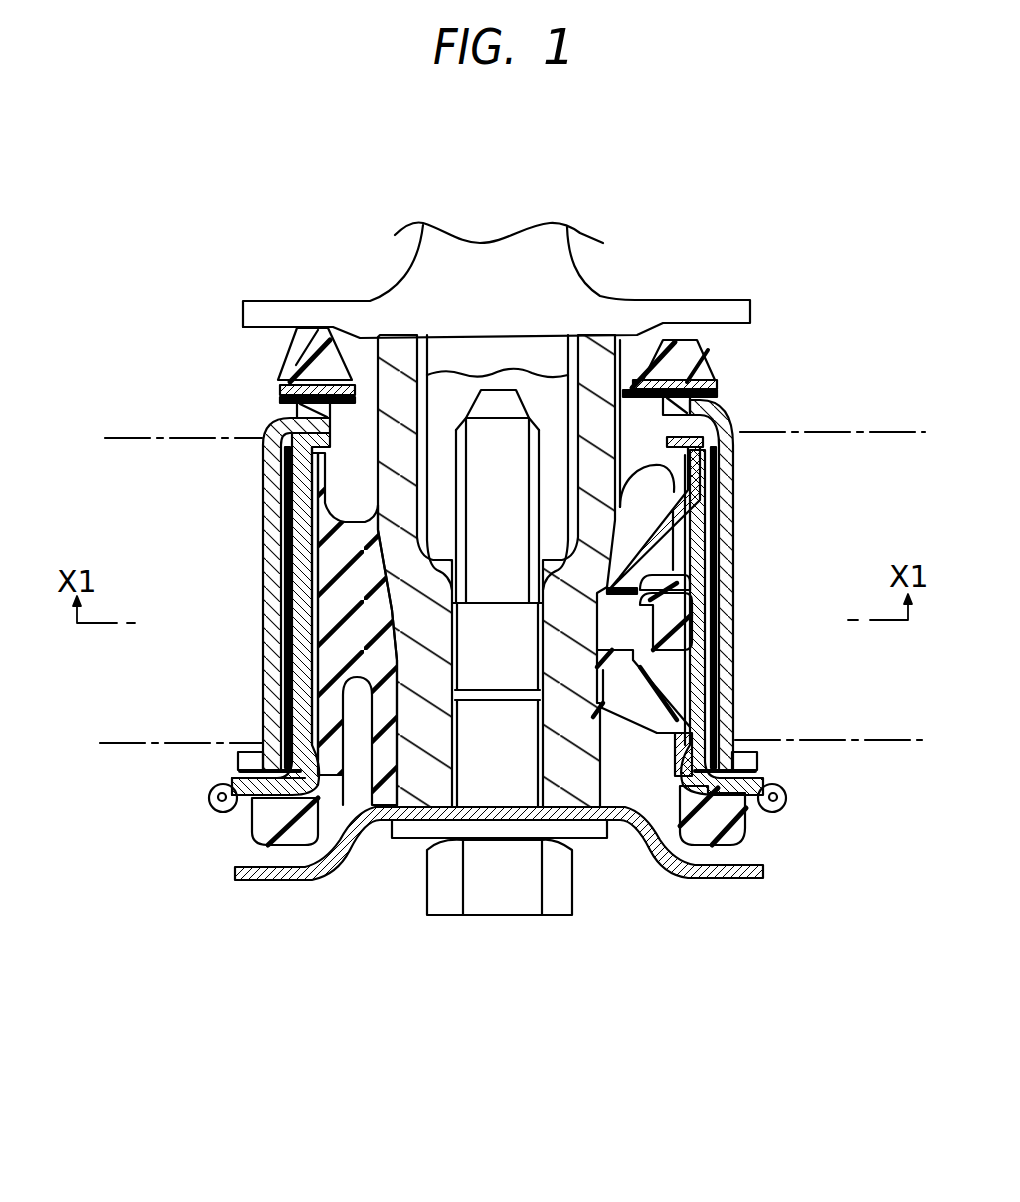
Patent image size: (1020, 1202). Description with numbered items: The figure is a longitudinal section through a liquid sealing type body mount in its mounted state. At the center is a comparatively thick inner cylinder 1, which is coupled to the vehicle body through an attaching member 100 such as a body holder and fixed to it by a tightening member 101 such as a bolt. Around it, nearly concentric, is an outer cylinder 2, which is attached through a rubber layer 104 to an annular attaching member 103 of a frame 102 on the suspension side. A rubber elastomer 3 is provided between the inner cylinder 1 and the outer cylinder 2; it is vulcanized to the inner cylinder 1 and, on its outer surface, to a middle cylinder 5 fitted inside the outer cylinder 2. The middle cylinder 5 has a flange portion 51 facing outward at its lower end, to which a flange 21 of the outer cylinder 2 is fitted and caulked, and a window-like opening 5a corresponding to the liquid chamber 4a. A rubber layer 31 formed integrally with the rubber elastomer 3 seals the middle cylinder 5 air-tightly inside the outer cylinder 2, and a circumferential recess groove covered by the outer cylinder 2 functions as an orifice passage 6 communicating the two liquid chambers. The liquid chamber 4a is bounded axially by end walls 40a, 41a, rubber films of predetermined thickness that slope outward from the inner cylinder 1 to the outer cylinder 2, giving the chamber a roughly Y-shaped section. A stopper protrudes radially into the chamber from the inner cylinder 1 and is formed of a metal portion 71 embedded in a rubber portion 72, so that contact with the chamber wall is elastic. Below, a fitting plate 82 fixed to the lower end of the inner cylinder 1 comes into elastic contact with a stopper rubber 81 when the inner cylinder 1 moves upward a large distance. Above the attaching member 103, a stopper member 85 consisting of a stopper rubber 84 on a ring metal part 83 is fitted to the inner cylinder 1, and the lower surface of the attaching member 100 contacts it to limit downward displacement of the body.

The inner cylinder 1 is at (570, 770).
The outer cylinder 2 is at (657, 540).
The rubber elastomer 3 is at (367, 653).
The liquid chamber 4a is at (650, 532).
The middle cylinder 5 is at (267, 602).
The window-like opening 5a is at (727, 697).
The orifice passage 6 is at (312, 708).
The flange 21 is at (214, 803).
The rubber layer 31 is at (300, 660).
The end wall 40a is at (703, 437).
The end wall 41a is at (657, 723).
The flange portion 51 is at (250, 812).
The metal portion 71 is at (685, 585).
The rubber portion 72 is at (680, 637).
The stopper rubber 81 is at (287, 838).
The fitting plate 82 is at (310, 877).
The ring metal part 83 is at (705, 362).
The stopper rubber 84 is at (682, 353).
The stopper member 85 is at (720, 370).
The attaching member 100 is at (542, 260).
The tightening member 101 is at (497, 778).
The frame 102 is at (112, 740).
The attaching member 103 is at (283, 465).
The rubber layer 104 is at (287, 510).